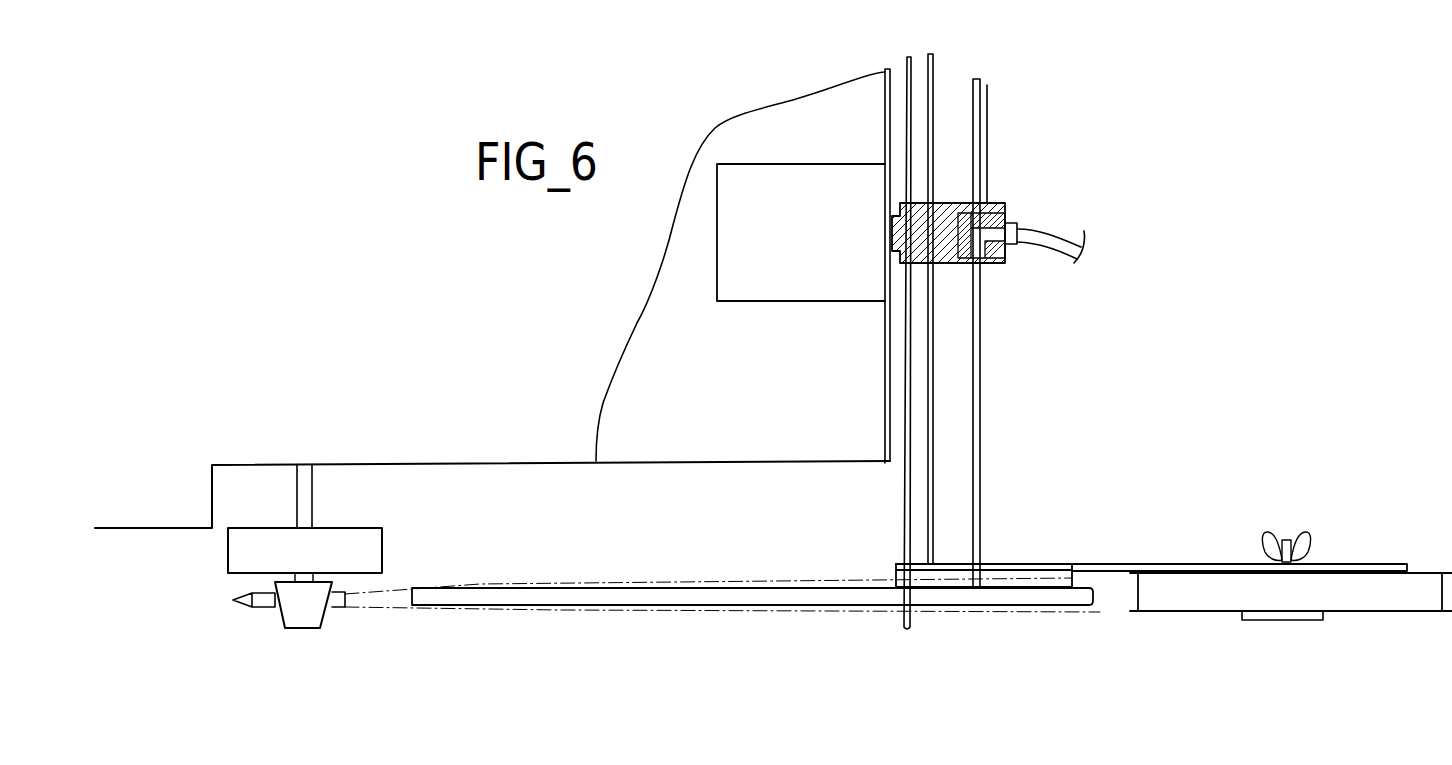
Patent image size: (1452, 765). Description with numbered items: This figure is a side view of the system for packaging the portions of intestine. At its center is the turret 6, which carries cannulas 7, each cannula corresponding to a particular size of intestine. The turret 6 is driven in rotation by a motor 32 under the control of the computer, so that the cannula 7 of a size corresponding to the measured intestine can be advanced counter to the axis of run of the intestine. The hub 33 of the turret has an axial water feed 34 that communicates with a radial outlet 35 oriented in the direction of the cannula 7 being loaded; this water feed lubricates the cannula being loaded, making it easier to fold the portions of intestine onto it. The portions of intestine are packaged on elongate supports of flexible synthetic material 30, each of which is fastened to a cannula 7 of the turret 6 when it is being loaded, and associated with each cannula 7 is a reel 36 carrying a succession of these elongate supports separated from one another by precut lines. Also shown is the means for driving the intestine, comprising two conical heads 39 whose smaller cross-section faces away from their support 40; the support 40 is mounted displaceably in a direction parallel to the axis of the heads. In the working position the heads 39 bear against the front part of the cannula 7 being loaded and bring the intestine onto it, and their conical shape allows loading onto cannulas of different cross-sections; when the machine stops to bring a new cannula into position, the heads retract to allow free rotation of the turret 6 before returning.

The turret 6 is at (1007, 141).
The cannula 7 is at (750, 600).
The elongate support of flexible synthetic material 30 is at (1106, 613).
The motor 32 is at (737, 200).
The hub 33 is at (943, 220).
The axial water feed 34 is at (1063, 237).
The radial outlet 35 is at (987, 300).
The reel 36 is at (1410, 597).
The conical head 39 is at (306, 604).
The support 40 is at (247, 553).